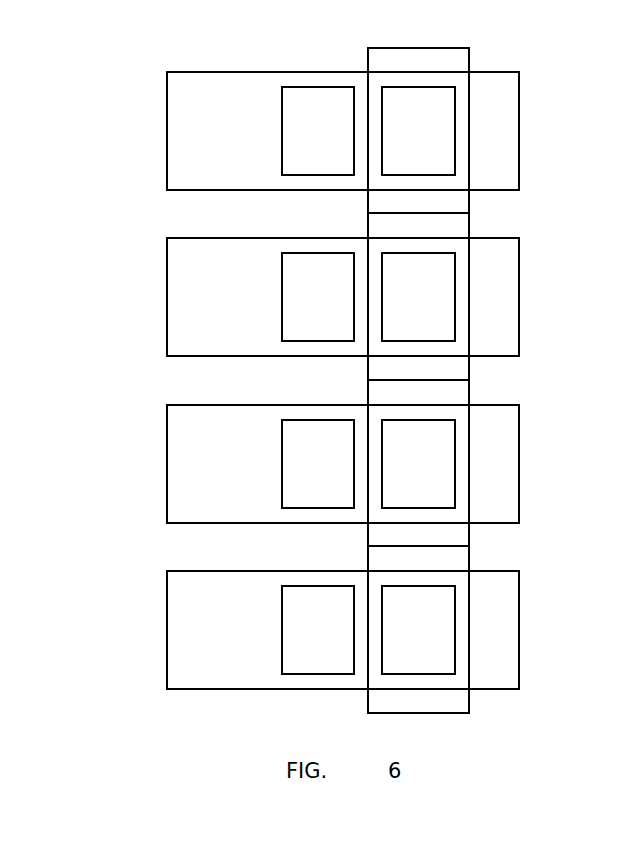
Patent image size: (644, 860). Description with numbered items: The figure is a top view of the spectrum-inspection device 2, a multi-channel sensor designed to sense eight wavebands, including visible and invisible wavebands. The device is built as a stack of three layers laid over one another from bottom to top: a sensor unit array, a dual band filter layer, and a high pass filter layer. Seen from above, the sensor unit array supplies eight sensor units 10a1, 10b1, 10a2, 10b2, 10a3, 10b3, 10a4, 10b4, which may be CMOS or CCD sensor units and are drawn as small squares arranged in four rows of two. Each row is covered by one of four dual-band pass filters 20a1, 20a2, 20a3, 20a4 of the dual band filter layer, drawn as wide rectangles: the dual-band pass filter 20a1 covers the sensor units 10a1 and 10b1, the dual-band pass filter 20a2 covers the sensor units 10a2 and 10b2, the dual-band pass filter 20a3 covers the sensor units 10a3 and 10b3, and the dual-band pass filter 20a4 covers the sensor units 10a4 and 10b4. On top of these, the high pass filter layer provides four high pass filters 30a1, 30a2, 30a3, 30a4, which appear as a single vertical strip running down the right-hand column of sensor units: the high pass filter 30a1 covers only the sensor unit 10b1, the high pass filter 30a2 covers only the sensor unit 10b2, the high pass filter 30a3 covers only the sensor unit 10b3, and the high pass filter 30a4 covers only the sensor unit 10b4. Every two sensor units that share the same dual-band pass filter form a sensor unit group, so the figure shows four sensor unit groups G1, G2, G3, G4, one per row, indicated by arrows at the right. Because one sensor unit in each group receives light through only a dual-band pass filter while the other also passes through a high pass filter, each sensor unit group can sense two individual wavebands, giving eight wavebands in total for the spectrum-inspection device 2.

The spectrum-inspection device 2 is at (104, 72).
The dual-band pass filter 20a1 is at (203, 130).
The dual-band pass filter 20a2 is at (203, 296).
The dual-band pass filter 20a3 is at (203, 463).
The dual-band pass filter 20a4 is at (203, 629).
The sensor unit 10a1 is at (292, 145).
The sensor unit 10b1 is at (392, 145).
The sensor unit 10a2 is at (292, 311).
The sensor unit 10b2 is at (392, 311).
The sensor unit 10a3 is at (292, 478).
The sensor unit 10b3 is at (392, 478).
The sensor unit 10a4 is at (292, 644).
The sensor unit 10b4 is at (392, 644).
The high pass filter 30a1 is at (455, 60).
The high pass filter 30a2 is at (455, 226).
The high pass filter 30a3 is at (455, 393).
The high pass filter 30a4 is at (455, 559).
The sensor unit group G1 is at (343, 125).
The sensor unit group G2 is at (343, 291).
The sensor unit group G3 is at (343, 458).
The sensor unit group G4 is at (343, 624).